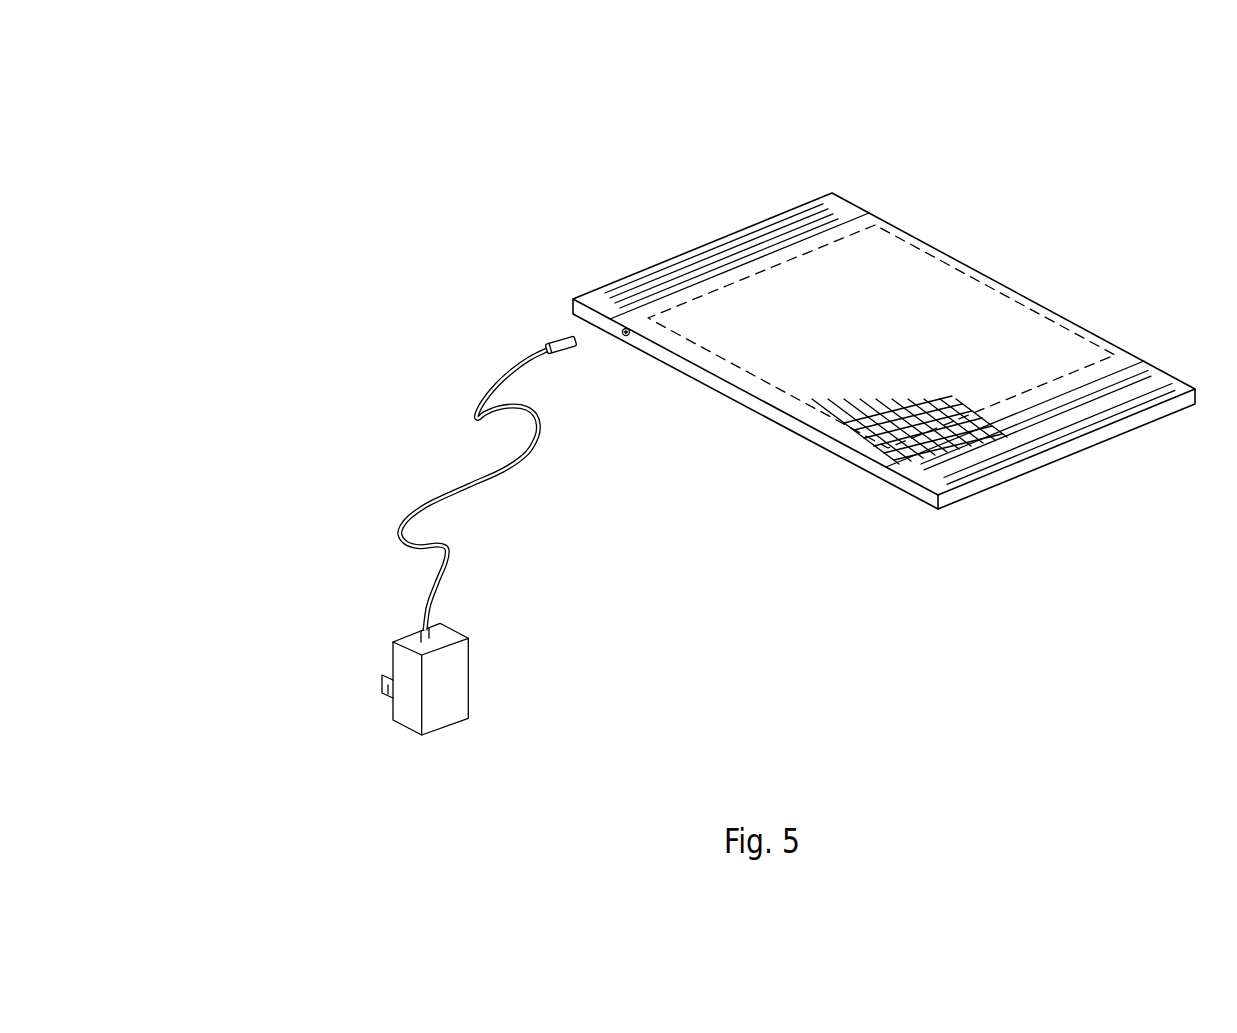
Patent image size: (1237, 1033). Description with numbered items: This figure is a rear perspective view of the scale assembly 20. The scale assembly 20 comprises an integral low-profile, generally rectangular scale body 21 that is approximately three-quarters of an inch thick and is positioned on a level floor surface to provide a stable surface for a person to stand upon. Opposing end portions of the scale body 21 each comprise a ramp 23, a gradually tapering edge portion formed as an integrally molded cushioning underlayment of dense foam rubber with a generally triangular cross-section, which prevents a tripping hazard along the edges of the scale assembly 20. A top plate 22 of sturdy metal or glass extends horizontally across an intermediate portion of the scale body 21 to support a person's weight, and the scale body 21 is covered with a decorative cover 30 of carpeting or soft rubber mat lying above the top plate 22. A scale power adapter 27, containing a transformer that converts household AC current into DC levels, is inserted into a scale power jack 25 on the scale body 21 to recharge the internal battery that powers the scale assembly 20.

The scale assembly 20 is at (294, 147).
The scale body 21 is at (1012, 280).
The top plate 22 is at (900, 237).
The ramp 23 is at (590, 298).
The scale power jack 25 is at (630, 340).
The scale power adapter 27 is at (457, 685).
The cover 30 is at (840, 450).